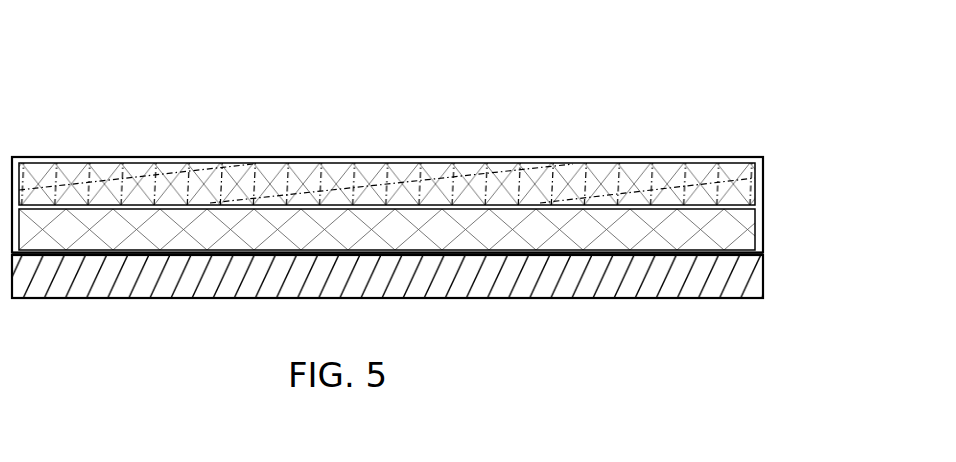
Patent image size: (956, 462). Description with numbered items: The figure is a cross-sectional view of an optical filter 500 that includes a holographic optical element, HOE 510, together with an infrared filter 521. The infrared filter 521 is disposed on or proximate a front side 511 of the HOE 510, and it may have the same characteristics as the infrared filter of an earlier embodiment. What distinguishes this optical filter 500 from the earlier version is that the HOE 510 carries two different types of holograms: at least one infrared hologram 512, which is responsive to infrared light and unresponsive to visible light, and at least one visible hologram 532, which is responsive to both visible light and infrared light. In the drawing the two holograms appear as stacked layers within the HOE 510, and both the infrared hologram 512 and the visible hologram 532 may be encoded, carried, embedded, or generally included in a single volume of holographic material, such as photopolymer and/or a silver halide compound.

The optical filter 500 is at (440, 219).
The HOE 510 is at (437, 175).
The front side 511 is at (523, 252).
The infrared hologram 512 is at (161, 230).
The infrared filter 521 is at (763, 277).
The visible hologram 532 is at (337, 182).